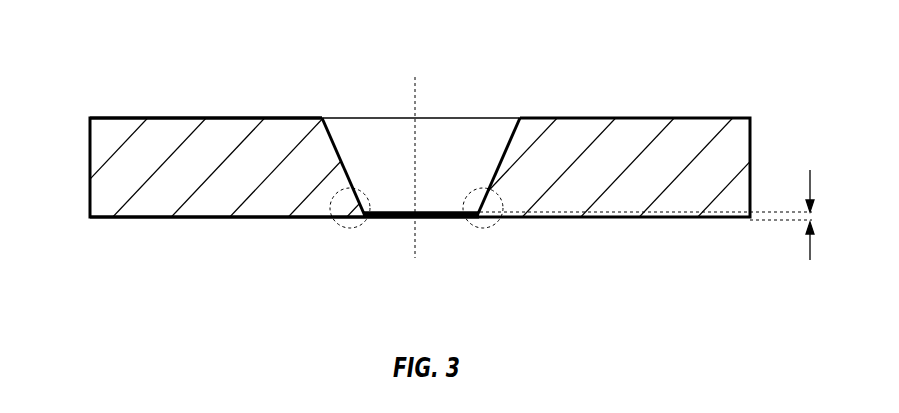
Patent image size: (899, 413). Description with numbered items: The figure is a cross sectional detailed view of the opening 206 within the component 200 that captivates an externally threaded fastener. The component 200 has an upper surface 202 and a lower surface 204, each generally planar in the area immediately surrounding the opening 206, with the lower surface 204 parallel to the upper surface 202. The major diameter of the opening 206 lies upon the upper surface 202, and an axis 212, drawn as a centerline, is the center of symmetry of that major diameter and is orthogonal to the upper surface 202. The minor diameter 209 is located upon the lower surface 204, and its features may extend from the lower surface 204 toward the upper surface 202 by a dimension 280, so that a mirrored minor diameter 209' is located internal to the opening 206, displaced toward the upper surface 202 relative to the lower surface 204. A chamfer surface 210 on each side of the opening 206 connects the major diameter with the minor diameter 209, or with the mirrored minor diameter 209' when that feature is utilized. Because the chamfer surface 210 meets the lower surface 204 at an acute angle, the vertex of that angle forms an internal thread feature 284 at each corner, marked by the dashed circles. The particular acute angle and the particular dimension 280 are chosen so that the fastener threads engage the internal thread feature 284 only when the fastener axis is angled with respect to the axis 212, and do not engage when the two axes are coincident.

The component 200 is at (435, 167).
The upper surface 202 is at (143, 106).
The lower surface 204 is at (155, 232).
The opening 206 is at (385, 258).
The minor diameter 209 is at (427, 257).
The mirrored minor diameter 209' is at (415, 133).
The chamfer surface 210 is at (345, 140).
The axis 212 is at (415, 92).
The dimension 280 is at (651, 230).
The internal thread feature 284 is at (343, 224).